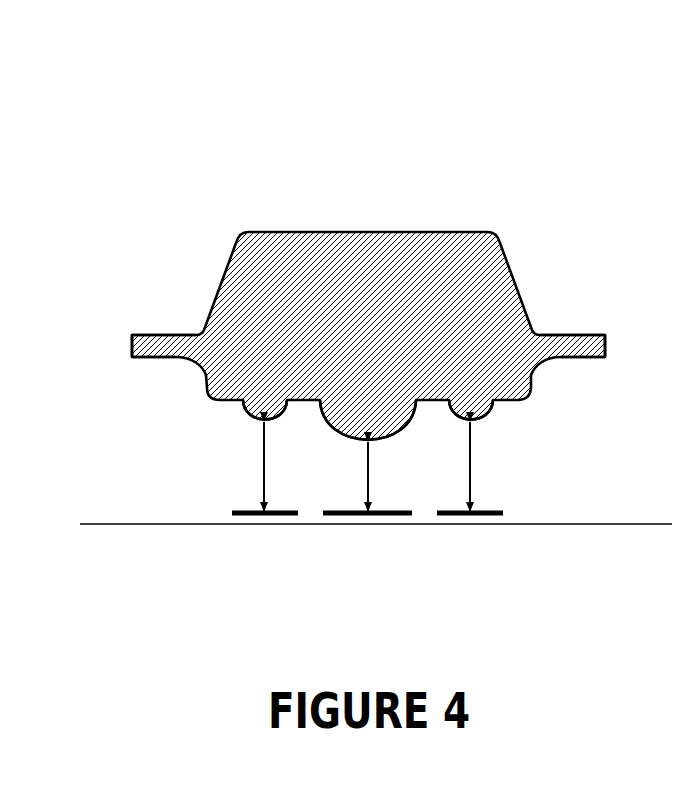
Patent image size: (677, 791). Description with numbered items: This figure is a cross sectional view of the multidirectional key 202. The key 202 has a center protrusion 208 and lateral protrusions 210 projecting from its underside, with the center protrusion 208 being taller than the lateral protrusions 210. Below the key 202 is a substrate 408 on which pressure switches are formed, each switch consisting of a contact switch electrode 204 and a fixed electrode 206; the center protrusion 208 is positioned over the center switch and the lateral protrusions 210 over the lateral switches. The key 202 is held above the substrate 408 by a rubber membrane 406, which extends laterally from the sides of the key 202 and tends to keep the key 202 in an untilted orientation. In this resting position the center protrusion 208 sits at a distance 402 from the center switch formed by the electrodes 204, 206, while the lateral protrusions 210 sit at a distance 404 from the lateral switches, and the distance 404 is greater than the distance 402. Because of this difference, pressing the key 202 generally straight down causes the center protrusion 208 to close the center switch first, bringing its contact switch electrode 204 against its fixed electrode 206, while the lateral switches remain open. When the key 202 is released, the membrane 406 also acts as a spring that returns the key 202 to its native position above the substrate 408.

The key 202 is at (368, 232).
The center protrusion 208 is at (368, 436).
The lateral protrusions 210 is at (470, 420).
The rubber membrane 406 is at (157, 358).
The distance 404 is at (393, 467).
The distance 402 is at (394, 477).
The contact switch electrode 204 is at (367, 561).
The fixed electrode 206 is at (460, 516).
The substrate 408 is at (125, 524).